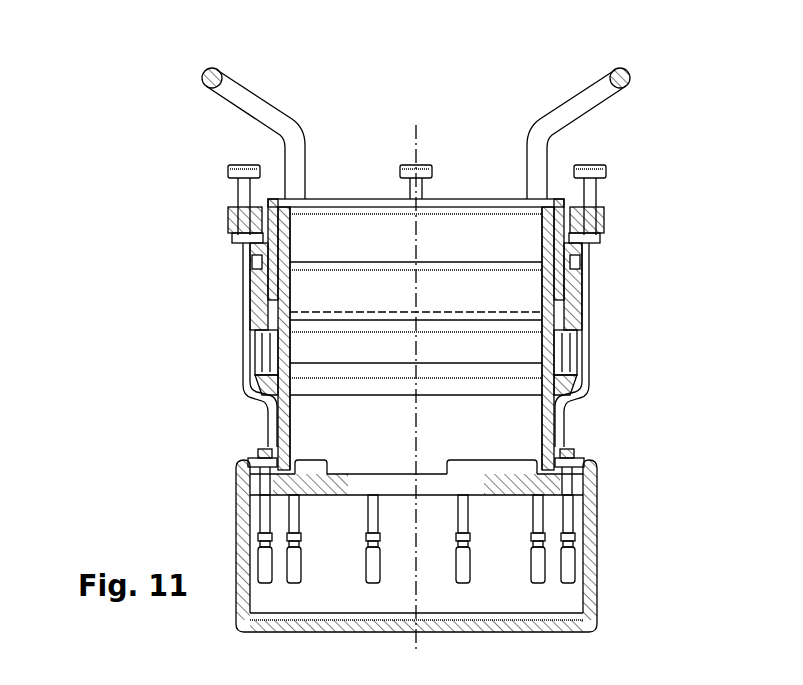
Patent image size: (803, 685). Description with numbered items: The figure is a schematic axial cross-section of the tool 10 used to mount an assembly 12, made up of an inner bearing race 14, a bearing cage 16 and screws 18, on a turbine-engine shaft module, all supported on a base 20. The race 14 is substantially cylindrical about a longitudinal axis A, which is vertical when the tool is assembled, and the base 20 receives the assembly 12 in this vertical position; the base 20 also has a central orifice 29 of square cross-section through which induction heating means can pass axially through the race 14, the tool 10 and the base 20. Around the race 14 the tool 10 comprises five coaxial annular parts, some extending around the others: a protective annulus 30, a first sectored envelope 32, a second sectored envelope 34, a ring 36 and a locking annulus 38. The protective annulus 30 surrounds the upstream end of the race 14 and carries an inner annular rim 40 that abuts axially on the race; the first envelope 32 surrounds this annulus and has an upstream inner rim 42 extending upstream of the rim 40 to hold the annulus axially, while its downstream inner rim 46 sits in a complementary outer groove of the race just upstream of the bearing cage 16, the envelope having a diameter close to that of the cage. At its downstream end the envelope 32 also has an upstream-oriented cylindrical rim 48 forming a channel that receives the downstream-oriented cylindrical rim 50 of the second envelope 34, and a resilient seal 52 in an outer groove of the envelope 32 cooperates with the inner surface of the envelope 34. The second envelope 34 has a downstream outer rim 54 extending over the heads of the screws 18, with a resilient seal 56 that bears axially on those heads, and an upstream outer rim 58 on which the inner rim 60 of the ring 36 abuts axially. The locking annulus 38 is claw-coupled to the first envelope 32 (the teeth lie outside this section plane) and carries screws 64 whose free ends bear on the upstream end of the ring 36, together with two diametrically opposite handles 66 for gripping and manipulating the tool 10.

The tool 10 is at (575, 70).
The assembly 12 is at (291, 436).
The inner bearing race 14 is at (290, 368).
The bearing cage 16 is at (290, 322).
The screws 18 is at (268, 567).
The supporting base 20 is at (597, 508).
The central orifice 29 is at (470, 498).
The protective annulus 30 is at (590, 222).
The first sectored envelope 32 is at (273, 322).
The second sectored envelope 34 is at (246, 392).
The ring 36 is at (584, 352).
The locking annulus 38 is at (228, 220).
The inner annular rim 40 is at (545, 212).
The inner annular rim 42 is at (280, 210).
The inner annular rim 46 is at (559, 322).
The cylindrical rim 48 is at (258, 280).
The cylindrical rim 50 is at (285, 282).
The resilient seal 52 is at (547, 270).
The outer annular rim 54 is at (255, 455).
The resilient seal 56 is at (570, 455).
The outer annular rim 58 is at (590, 248).
The inner rim 60 is at (240, 241).
The screws 64 is at (240, 172).
The handles 66 is at (250, 103).
The longitudinal axis A is at (416, 135).